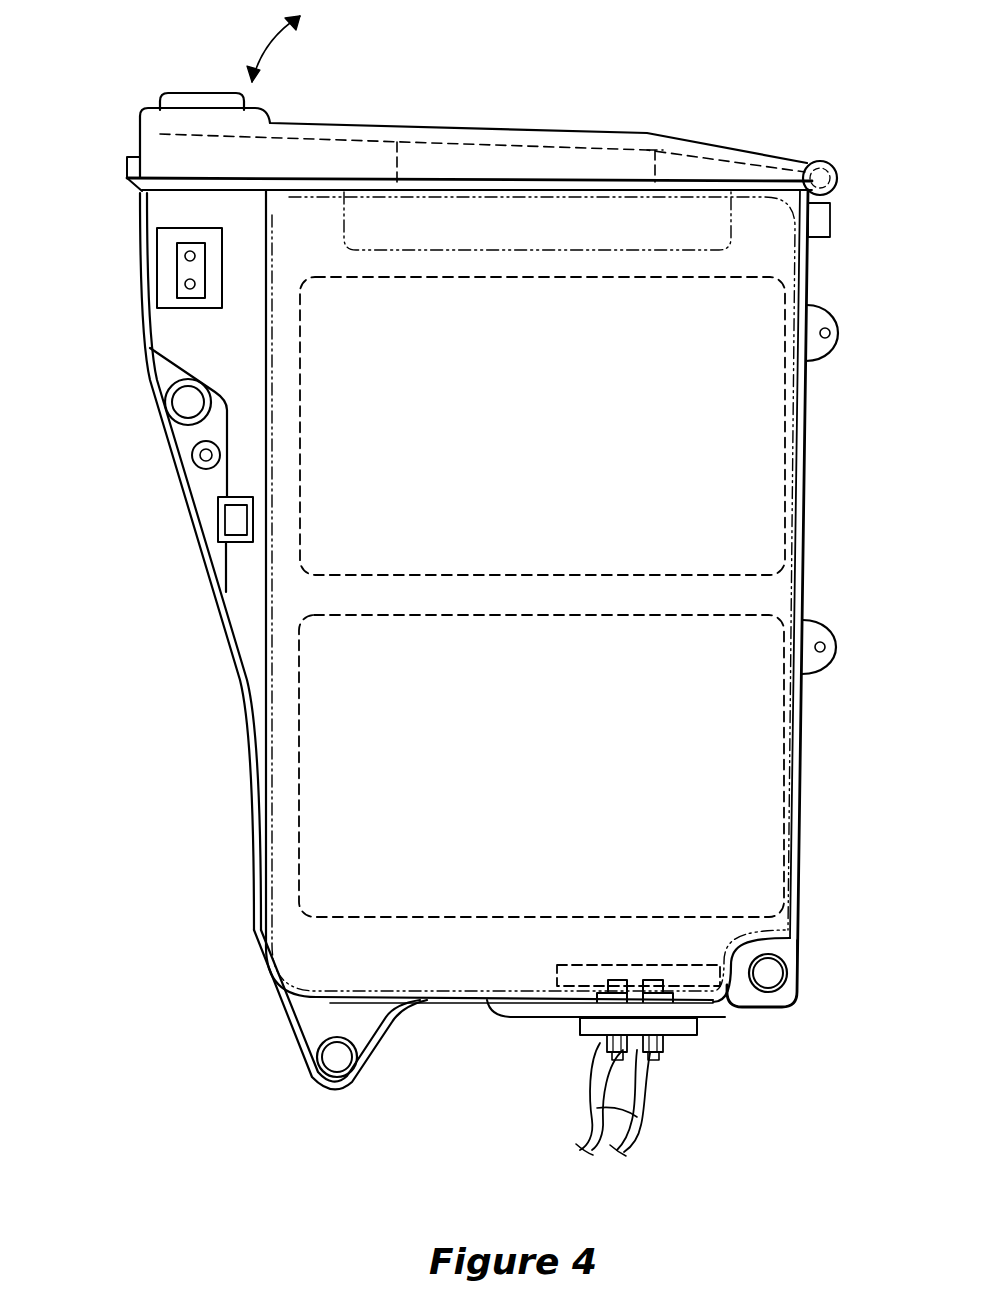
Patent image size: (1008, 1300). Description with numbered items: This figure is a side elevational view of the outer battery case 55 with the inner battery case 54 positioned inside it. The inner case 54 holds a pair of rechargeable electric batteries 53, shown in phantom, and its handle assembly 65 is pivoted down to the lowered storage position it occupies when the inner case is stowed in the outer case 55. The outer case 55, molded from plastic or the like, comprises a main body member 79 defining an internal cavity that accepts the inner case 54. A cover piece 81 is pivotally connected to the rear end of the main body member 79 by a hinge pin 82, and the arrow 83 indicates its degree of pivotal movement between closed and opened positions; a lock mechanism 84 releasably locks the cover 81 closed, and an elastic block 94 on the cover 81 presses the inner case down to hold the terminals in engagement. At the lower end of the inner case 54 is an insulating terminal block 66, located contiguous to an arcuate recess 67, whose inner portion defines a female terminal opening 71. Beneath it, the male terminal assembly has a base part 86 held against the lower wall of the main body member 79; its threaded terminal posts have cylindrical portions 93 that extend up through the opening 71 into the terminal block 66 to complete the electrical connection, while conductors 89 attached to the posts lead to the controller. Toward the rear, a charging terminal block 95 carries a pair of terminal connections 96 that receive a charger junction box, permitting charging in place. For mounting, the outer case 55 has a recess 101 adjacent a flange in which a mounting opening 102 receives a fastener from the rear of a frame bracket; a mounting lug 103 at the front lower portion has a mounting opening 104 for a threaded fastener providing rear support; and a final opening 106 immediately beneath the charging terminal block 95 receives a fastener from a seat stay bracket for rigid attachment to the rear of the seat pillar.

The rechargeable electric batteries 53 is at (762, 500).
The inner battery case 54 is at (760, 600).
The outer battery case 55 is at (828, 410).
The handle assembly 65 is at (715, 230).
The terminal block 66 is at (707, 982).
The arcuate recess 67 is at (737, 940).
The female terminal opening 71 is at (655, 980).
The main body member 79 is at (757, 541).
The cover piece 81 is at (372, 123).
The hinge pin 82 is at (826, 162).
The arrow 83 is at (268, 40).
The lock mechanism 84 is at (165, 94).
The base part 86 is at (580, 1022).
The conductors 89 is at (637, 1092).
The cylindrical portions 93 is at (576, 965).
The elastic block 94 is at (662, 163).
The charging terminal block 95 is at (157, 270).
The terminal connections 96 is at (185, 256).
The recess 101 is at (753, 1007).
The mounting opening 102 is at (773, 975).
The mounting lug 103 is at (283, 1020).
The mounting opening 104 is at (345, 1060).
The opening 106 is at (187, 405).